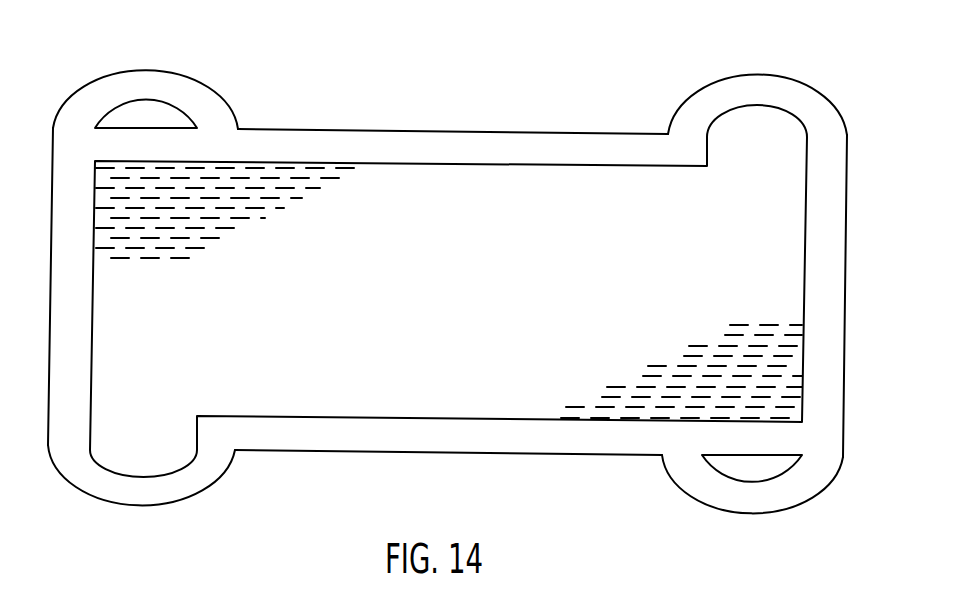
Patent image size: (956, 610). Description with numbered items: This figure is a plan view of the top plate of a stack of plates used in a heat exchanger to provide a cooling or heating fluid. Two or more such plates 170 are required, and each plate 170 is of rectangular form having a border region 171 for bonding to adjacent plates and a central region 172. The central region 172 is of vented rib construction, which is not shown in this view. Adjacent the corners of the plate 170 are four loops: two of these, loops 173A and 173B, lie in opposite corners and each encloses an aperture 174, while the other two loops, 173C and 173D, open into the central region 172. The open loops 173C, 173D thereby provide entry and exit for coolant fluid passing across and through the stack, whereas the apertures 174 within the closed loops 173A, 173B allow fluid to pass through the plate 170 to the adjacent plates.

The plate 170 is at (457, 293).
The border region 171 is at (338, 144).
The central region 172 is at (460, 312).
The loop 173A is at (202, 98).
The loop 173B is at (777, 495).
The loop 173C is at (775, 88).
The loop 173D is at (183, 478).
The aperture 174 is at (123, 112).